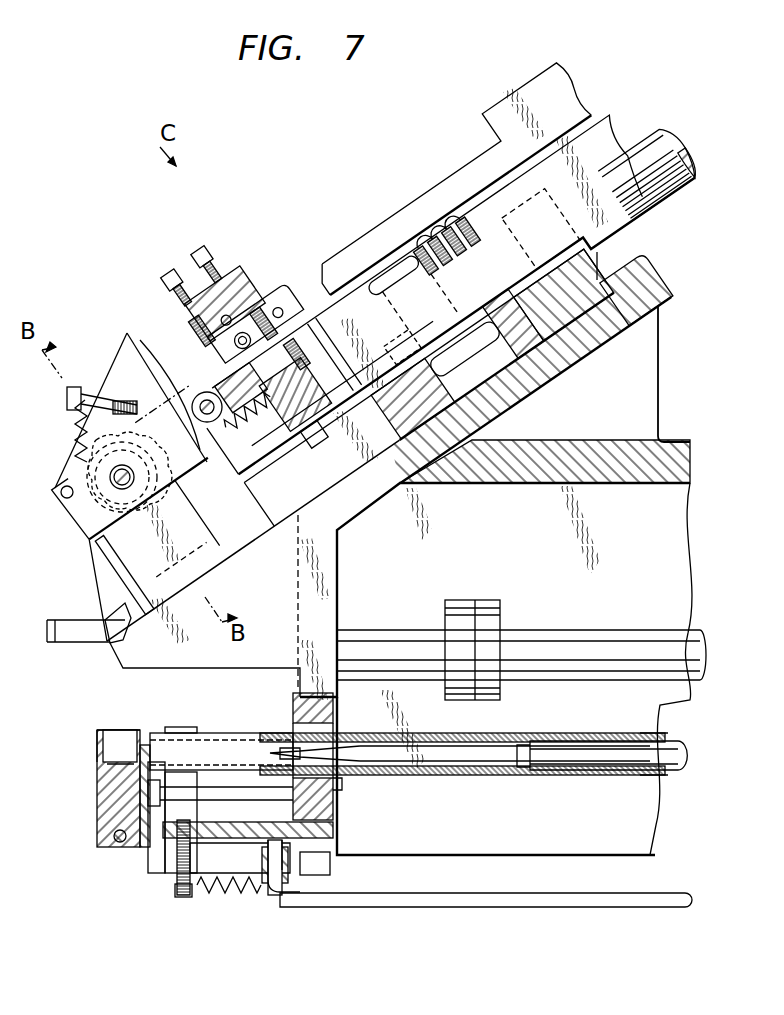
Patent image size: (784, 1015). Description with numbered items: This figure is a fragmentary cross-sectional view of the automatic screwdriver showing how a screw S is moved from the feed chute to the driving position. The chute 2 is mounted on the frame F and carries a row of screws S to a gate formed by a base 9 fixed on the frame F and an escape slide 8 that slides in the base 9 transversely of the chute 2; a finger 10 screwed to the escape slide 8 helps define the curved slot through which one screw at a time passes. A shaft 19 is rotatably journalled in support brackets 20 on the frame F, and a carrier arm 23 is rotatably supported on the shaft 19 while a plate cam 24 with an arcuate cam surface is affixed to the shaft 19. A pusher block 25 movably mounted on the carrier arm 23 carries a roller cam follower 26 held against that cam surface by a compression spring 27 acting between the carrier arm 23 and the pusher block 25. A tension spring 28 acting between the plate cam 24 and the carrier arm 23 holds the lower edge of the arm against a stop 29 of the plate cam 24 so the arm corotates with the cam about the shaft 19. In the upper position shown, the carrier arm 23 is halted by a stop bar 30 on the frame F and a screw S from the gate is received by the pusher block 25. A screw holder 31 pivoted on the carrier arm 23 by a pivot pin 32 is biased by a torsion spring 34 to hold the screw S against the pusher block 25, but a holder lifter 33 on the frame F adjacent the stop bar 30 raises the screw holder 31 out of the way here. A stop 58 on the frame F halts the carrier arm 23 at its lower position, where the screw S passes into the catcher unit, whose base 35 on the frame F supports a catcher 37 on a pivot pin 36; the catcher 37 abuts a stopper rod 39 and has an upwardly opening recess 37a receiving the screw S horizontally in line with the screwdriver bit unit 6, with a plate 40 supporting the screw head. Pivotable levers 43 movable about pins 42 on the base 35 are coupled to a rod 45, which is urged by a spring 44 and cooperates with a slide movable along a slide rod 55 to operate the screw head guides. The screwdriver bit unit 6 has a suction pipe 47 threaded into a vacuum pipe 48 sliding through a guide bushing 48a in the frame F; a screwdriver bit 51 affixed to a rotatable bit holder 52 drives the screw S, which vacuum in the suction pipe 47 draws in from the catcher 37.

The chute 2 is at (470, 138).
The screwdriver bit unit 6 is at (670, 734).
The escape slide 8 is at (450, 330).
The base 9 is at (493, 300).
The finger 10 is at (387, 273).
The shaft 19 is at (110, 476).
The support bracket 20 is at (140, 565).
The carrier arm 23 is at (75, 520).
The plate cam 24 is at (133, 352).
The pusher block 25 is at (213, 392).
The roller cam follower 26 is at (185, 385).
The compression spring 27 is at (288, 441).
The tension spring 28 is at (66, 447).
The stop 29 is at (133, 387).
The stop bar 30 is at (205, 252).
The screw holder 31 is at (293, 310).
The pivot pin 32 is at (257, 290).
The holder lifter 33 is at (175, 280).
The torsion spring 34 is at (263, 300).
The base 35 is at (152, 852).
The pivot pin 36 is at (112, 838).
The catcher 37 is at (100, 783).
The recess 37a is at (102, 750).
The stopper rod 39 is at (222, 787).
The plate 40 is at (142, 848).
The pin 42 is at (290, 893).
The pivotable lever 43 is at (167, 875).
The spring 44 is at (215, 890).
The rod 45 is at (492, 907).
The suction pipe 47 is at (213, 733).
The vacuum pipe 48 is at (458, 776).
The guide bushing 48a is at (345, 787).
The screwdriver bit 51 is at (493, 762).
The bit holder 52 is at (595, 771).
The slide rod 55 is at (598, 648).
The stop 58 is at (52, 642).
The screw S is at (410, 245).
The frame F is at (672, 280).